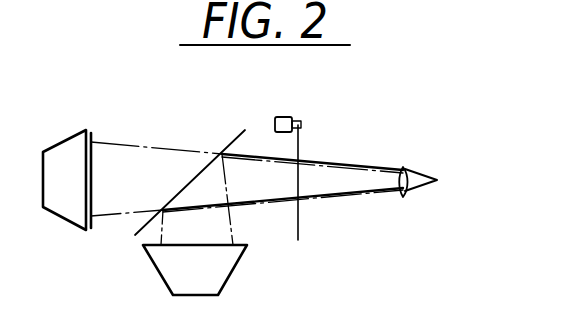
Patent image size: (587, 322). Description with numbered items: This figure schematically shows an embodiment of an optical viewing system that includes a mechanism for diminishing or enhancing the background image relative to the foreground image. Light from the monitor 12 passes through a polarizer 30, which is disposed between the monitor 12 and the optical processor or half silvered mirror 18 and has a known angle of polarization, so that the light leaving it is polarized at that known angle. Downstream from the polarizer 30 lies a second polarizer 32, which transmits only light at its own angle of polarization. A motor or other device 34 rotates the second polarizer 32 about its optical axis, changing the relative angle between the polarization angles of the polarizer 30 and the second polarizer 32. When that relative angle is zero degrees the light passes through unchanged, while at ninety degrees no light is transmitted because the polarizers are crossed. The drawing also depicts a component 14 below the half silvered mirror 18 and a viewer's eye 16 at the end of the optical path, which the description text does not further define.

The monitor 12 is at (62, 141).
The polarizer 30 is at (92, 134).
The optical processor/half silvered mirror 18 is at (232, 140).
The detector / light source 14 is at (237, 268).
The second polarizer 32 is at (300, 148).
The motor 34 is at (283, 117).
The eye of observer 16 is at (424, 167).